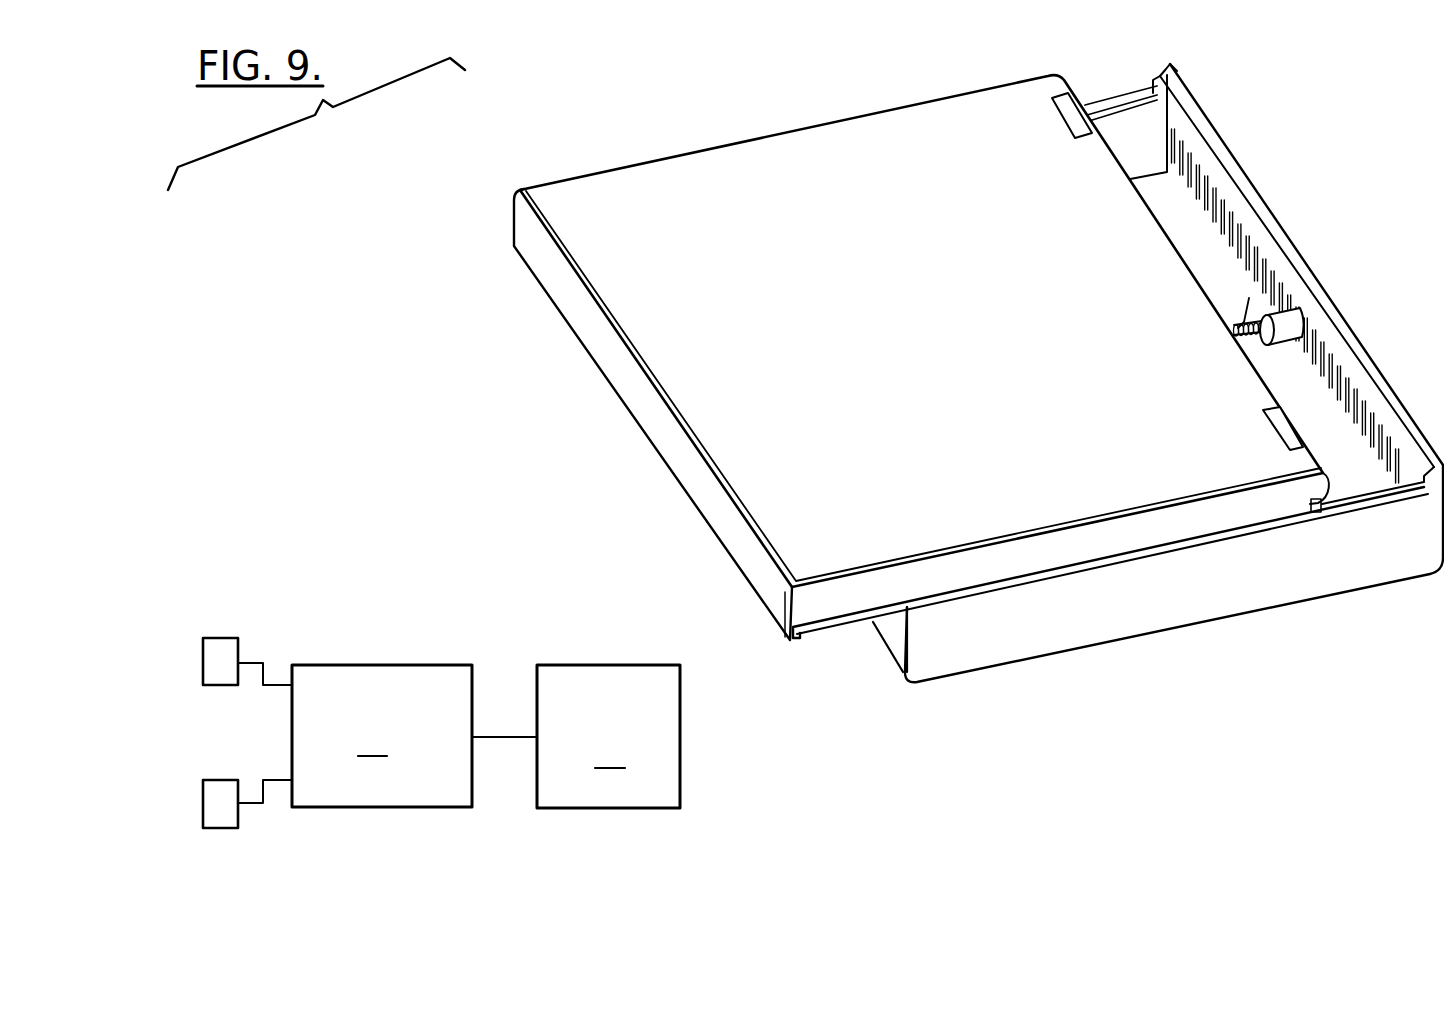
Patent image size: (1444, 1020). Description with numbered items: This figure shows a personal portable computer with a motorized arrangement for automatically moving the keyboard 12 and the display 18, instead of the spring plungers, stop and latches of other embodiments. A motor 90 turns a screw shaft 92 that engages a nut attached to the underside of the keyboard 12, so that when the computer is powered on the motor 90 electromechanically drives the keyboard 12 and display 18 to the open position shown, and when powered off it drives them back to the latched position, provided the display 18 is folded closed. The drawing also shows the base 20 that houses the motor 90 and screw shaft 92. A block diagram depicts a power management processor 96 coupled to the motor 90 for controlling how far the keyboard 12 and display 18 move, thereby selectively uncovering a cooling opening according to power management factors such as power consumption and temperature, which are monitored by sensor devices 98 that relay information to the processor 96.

The keyboard 12 is at (820, 637).
The display 18 is at (773, 134).
The base tray 20 is at (1217, 620).
The motor 90 is at (1287, 321).
The screw shaft 92 is at (1248, 300).
The power management processor 96 is at (414, 736).
The sensor devices 98 is at (215, 637).